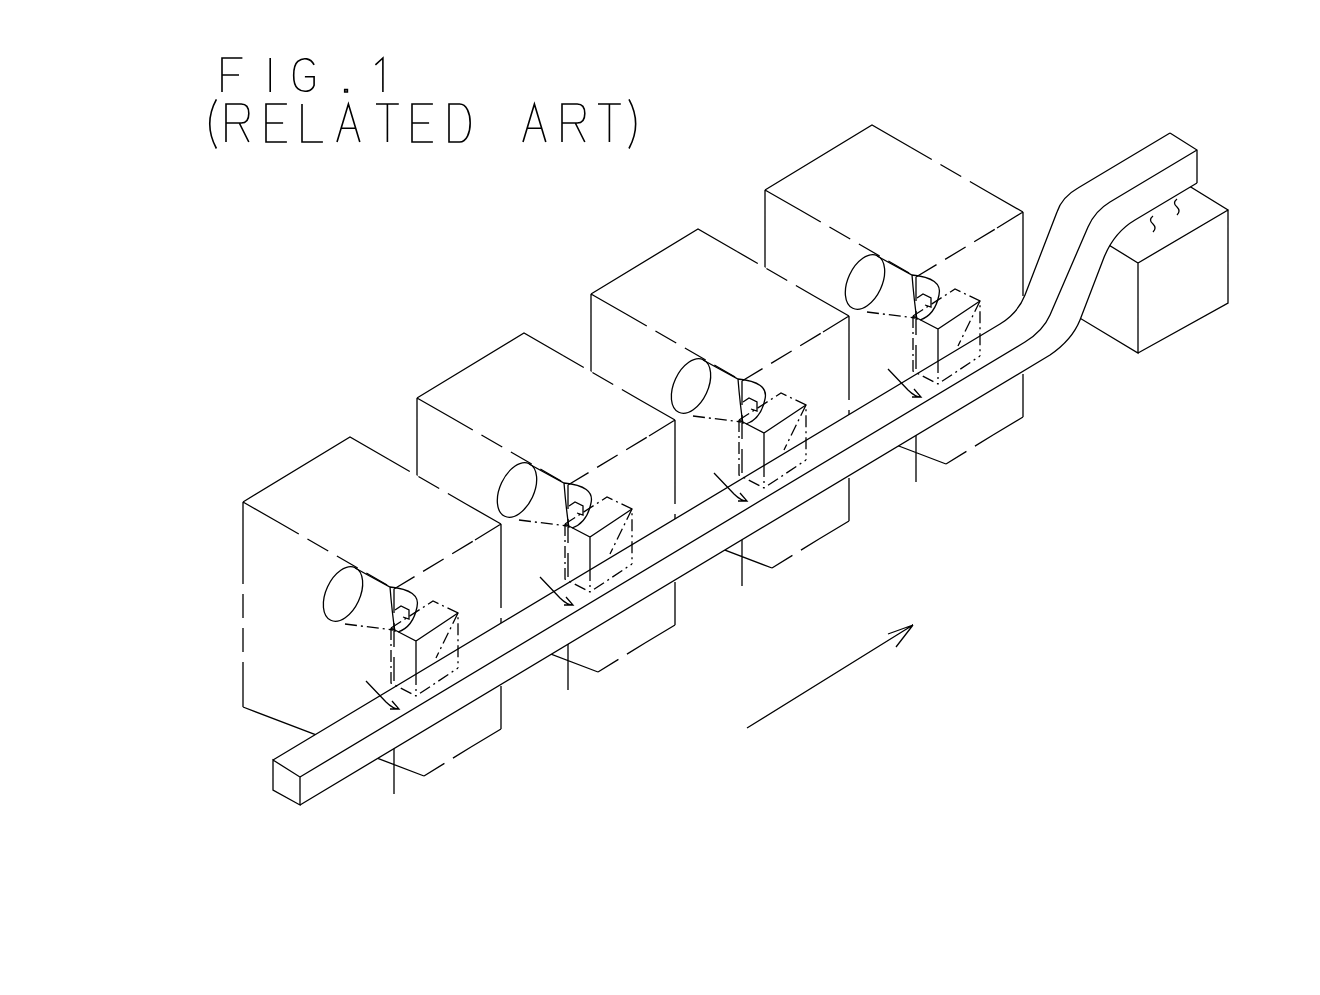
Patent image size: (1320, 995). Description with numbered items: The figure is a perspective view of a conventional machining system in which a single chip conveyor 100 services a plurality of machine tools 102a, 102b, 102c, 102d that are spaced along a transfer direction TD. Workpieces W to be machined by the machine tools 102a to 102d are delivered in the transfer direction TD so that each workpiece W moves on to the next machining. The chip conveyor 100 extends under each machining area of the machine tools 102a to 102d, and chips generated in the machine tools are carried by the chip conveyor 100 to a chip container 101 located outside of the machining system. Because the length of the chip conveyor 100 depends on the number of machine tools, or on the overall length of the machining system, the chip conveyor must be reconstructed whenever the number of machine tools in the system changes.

The chip conveyor 100 is at (325, 778).
The chip container 101 is at (1190, 308).
The machine tool 102a is at (308, 478).
The machine tool 102b is at (478, 380).
The machine tool 102c is at (647, 283).
The machine tool 102d is at (825, 180).
The workpiece W is at (697, 468).
The transfer direction TD is at (837, 673).